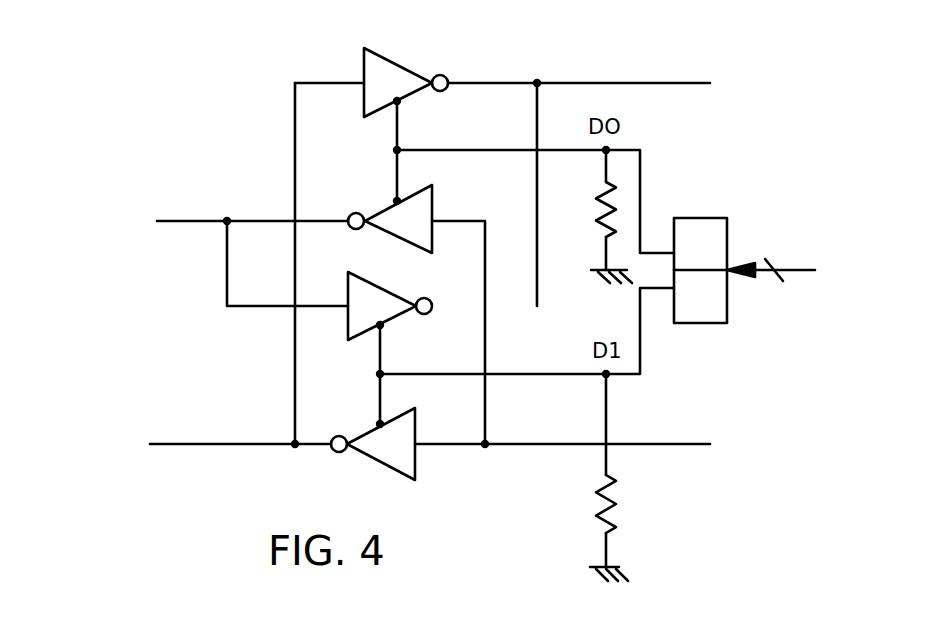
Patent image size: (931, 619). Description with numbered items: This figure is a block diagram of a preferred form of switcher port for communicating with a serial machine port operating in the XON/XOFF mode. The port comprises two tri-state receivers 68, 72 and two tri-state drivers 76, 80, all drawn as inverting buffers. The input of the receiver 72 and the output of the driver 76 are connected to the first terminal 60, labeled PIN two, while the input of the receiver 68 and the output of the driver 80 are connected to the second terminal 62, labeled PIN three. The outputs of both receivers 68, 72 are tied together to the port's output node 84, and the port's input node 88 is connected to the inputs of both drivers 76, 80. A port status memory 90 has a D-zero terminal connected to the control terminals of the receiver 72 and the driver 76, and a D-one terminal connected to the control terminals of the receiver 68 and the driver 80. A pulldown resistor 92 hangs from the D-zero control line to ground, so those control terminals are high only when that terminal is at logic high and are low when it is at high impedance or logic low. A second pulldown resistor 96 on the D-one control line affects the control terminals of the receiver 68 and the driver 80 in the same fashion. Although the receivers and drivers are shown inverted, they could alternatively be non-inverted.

The terminal 60 is at (180, 221).
The terminal 62 is at (202, 444).
The tri-state receiver 72 is at (402, 62).
The tri-state driver 76 is at (375, 232).
The tri-state receiver 68 is at (380, 287).
The tri-state driver 80 is at (375, 458).
The output node 84 is at (622, 82).
The input node 88 is at (560, 444).
The port status memory 90 is at (690, 218).
The pulldown resistor 92 is at (598, 227).
The pulldown resistor 96 is at (599, 512).